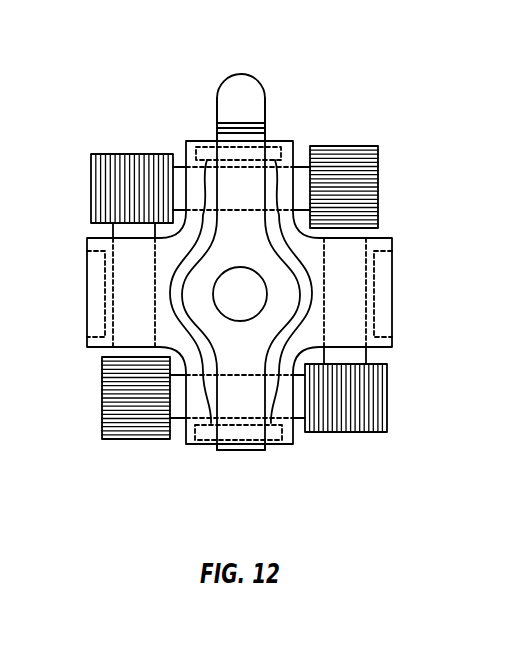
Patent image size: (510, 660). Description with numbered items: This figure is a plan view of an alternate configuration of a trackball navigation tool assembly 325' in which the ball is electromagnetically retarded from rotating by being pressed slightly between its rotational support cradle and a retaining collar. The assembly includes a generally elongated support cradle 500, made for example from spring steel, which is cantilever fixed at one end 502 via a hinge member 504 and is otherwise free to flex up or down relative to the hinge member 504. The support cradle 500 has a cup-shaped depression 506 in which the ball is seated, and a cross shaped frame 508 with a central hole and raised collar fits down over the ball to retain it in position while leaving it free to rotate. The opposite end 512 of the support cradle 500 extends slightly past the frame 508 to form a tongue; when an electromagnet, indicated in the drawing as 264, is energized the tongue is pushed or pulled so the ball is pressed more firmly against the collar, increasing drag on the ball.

The trackball navigation tool assembly 325' is at (222, 226).
The end of the support cradle 512 is at (248, 93).
The electromagnetic coil 264 is at (92, 192).
The cup-shaped depression 506 is at (240, 294).
The cross shaped frame 508 is at (348, 265).
The support cradle 500 is at (283, 302).
The end of the support cradle 502 is at (247, 400).
The hinge member 504 is at (241, 432).